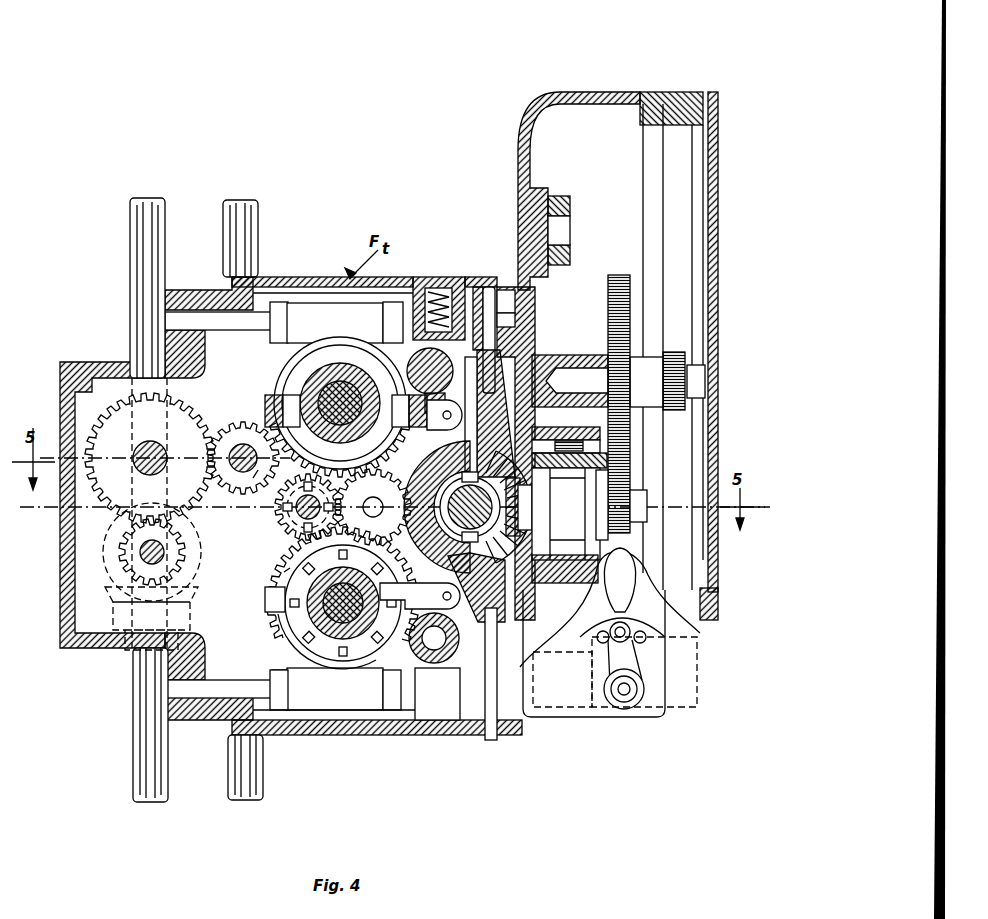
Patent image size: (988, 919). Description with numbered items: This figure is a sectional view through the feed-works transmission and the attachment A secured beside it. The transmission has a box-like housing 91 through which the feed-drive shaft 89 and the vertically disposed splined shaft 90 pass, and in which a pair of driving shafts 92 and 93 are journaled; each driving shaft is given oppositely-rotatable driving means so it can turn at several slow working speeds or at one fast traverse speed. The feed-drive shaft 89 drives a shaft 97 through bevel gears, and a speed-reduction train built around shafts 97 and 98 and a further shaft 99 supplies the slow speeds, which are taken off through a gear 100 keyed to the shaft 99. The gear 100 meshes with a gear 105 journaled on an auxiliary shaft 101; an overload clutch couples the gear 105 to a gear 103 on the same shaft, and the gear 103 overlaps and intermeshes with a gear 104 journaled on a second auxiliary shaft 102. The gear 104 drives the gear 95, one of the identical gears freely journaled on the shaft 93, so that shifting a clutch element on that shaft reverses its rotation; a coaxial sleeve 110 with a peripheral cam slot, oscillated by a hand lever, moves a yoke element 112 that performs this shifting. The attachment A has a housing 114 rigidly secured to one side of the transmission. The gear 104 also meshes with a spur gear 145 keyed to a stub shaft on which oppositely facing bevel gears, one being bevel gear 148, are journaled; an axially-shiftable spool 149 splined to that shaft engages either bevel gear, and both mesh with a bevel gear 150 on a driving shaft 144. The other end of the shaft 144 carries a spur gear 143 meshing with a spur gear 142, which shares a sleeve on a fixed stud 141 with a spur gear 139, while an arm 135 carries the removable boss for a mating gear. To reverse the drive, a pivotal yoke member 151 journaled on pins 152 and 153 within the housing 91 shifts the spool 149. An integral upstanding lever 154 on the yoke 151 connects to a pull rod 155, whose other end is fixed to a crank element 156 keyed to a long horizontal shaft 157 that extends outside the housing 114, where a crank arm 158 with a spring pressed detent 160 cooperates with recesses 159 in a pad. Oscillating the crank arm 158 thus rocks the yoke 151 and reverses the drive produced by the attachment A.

The attachment A is at (608, 88).
The feed-drive shaft 89 is at (130, 250).
The vertically disposed splined shaft 90 is at (258, 250).
The box-like housing 91 is at (378, 278).
The driving shaft 92 is at (318, 395).
The driving shaft 93 is at (300, 622).
The gear 95 is at (286, 572).
The shaft 97 is at (138, 552).
The shaft 98 is at (140, 470).
The shaft 99 is at (241, 478).
The gear 100 is at (252, 490).
The auxiliary shaft 101 is at (296, 522).
The auxiliary shaft 102 is at (368, 512).
The gear 103 is at (300, 540).
The gear 104 is at (395, 542).
The gear 105 is at (290, 507).
The sleeve 110 is at (436, 662).
The yoke element 112 is at (432, 597).
The housing 114 is at (518, 205).
The arm 135 is at (571, 228).
The spur gear 139 is at (675, 350).
The fixed stud 141 is at (705, 380).
The spur gear 142 is at (608, 328).
The spur gear 143 is at (630, 535).
The driving shaft 144 is at (648, 505).
The spur gear 145 is at (448, 462).
The bevel gear 148 is at (528, 600).
The spool 149 is at (522, 503).
The bevel gear 150 is at (520, 482).
The yoke member 151 is at (522, 612).
The pin 152 is at (492, 730).
The pin 153 is at (492, 290).
The lever 154 is at (486, 636).
The pull rod 155 is at (545, 660).
The crank element 156 is at (668, 670).
The shaft 157 is at (628, 708).
The crank arm 158 is at (648, 565).
The recesses 159 is at (642, 630).
The spring pressed detent 160 is at (616, 628).